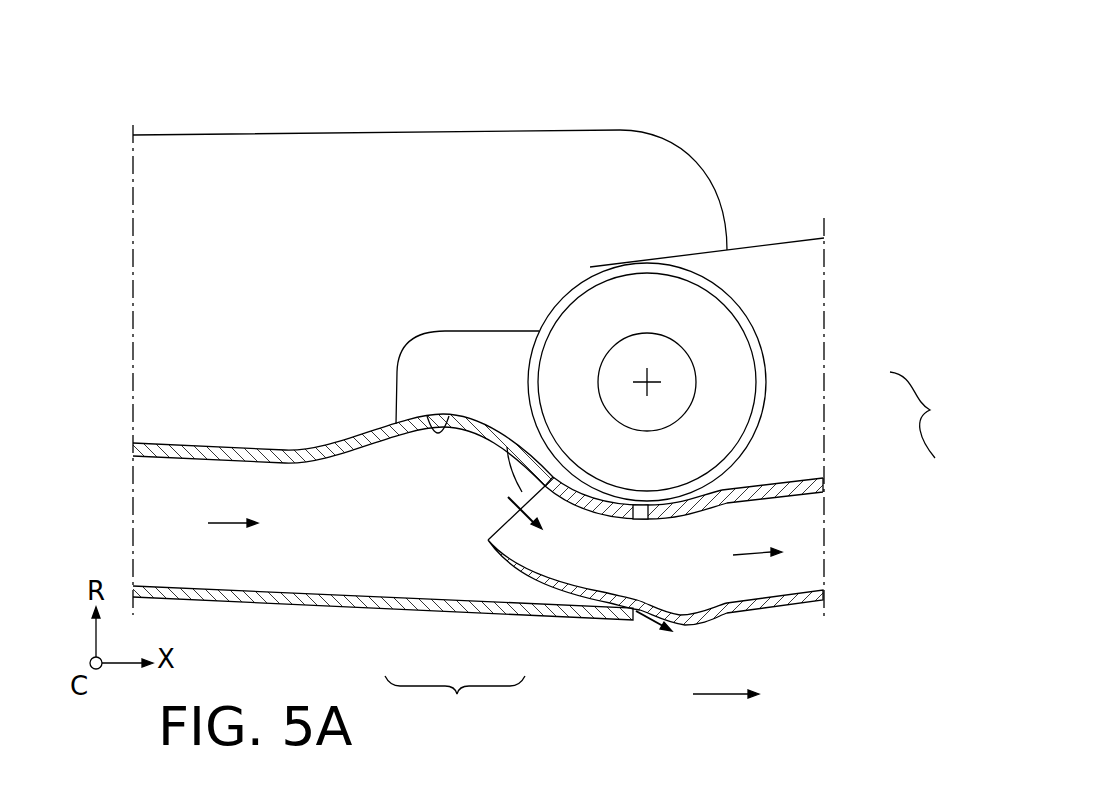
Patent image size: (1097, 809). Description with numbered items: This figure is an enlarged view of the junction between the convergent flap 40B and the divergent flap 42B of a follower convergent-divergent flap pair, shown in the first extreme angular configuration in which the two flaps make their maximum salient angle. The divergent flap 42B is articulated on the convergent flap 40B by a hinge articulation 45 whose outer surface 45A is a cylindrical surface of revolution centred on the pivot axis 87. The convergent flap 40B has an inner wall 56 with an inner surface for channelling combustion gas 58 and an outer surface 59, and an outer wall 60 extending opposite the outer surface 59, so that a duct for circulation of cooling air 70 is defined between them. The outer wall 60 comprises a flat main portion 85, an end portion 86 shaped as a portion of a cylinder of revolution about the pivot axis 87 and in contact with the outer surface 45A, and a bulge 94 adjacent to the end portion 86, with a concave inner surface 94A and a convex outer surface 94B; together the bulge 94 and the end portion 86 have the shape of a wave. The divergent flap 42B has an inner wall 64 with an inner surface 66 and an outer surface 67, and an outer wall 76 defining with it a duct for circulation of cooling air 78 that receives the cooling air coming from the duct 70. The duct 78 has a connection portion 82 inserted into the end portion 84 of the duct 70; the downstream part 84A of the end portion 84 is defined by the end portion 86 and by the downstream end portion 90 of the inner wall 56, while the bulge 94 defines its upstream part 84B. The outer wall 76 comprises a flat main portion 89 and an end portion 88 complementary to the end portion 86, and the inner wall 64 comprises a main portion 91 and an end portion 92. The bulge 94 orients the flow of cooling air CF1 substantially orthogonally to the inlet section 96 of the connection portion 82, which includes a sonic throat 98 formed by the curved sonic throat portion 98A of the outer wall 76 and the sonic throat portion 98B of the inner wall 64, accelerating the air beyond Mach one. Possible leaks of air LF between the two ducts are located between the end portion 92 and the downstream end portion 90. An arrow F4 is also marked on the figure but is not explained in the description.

The convergent flap 40B is at (246, 126).
The divergent flap 42B is at (770, 238).
The hinge articulation 45 is at (722, 311).
The outer surface of the hinge articulation 45A is at (763, 340).
The pivot axis 87 is at (650, 380).
The bulge 94 is at (431, 352).
The inner surface of the bulge 94A is at (402, 363).
The outer surface of the bulge 94B is at (443, 420).
The inlet section 96 is at (522, 492).
The outer wall 60 is at (298, 440).
The main portion of the outer wall 85 is at (168, 450).
The sonic throat 98 is at (740, 527).
The sonic throat portion of the outer wall 98A is at (706, 500).
The sonic throat portion of the inner wall 98B is at (786, 621).
The main portion of the outer wall 89 is at (806, 478).
The end portion of the outer wall 88 is at (606, 490).
The outer wall 76 is at (928, 415).
The inner wall 64 is at (786, 616).
The main portion of the inner wall 91 is at (786, 616).
The inner surface for channelling combustion gas 66 is at (774, 616).
The outer surface 67 is at (800, 585).
The end portion of the inner wall 92 is at (520, 560).
The inner surface for channelling combustion gas 58 is at (359, 598).
The inner wall 56 is at (359, 590).
The outer surface 59 is at (183, 585).
The duct for circulation of cooling air 70 is at (180, 543).
The duct for circulation of cooling air 78 is at (813, 543).
The end portion of the duct 84 is at (460, 615).
The downstream part of the end portion 84A is at (535, 600).
The upstream part of the end portion 84B is at (388, 512).
The connection portion 82 is at (568, 606).
The end portion of the outer wall 86 is at (614, 520).
The downstream end portion of the inner wall 90 is at (533, 602).
The flow of cooling air CF1 is at (232, 517).
The leaks of air LF is at (660, 623).
The flow direction F4 is at (727, 698).